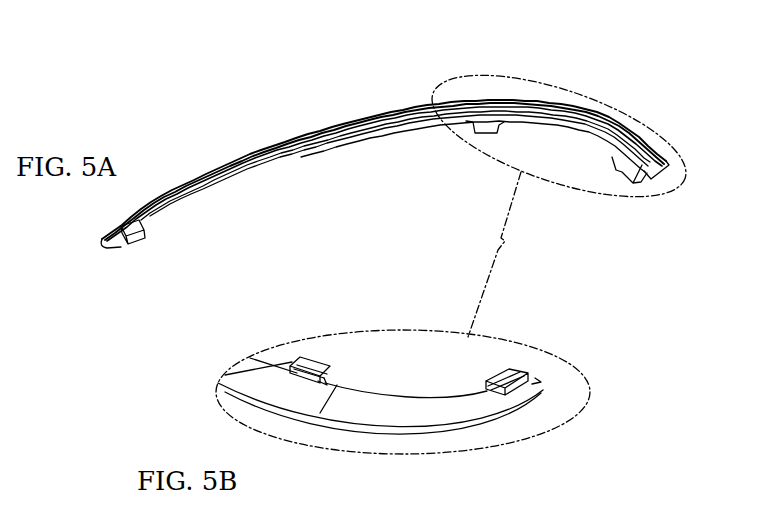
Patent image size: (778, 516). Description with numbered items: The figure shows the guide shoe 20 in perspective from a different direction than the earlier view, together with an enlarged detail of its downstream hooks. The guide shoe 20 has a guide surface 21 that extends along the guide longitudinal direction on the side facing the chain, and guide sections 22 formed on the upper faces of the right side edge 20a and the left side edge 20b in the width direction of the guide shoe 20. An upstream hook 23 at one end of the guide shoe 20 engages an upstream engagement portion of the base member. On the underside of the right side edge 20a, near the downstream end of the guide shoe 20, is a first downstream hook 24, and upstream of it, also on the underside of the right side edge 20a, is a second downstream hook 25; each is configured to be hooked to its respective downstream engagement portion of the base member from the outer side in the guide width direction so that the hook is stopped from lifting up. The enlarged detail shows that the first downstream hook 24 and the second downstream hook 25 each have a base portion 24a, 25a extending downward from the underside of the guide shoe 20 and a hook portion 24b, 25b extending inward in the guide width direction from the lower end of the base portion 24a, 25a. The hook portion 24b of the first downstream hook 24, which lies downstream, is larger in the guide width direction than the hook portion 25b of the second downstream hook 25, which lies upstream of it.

In FIG. 5A, the guide shoe 20 is at (107, 103).
In FIG. 5A, the right side edge 20a is at (378, 129).
In FIG. 5A, the left side edge 20b is at (387, 114).
In FIG. 5A, the guide surface 21 is at (563, 113).
In FIG. 5A, the guide sections 22 is at (352, 129).
In FIG. 5A, the upstream hook 23 is at (140, 245).
In FIG. 5A, the first downstream hook 24 is at (630, 181).
In FIG. 5B, the first downstream hook 24 is at (522, 393).
In FIG. 5B, the base portion 24a is at (531, 384).
In FIG. 5B, the hook portion 24b is at (500, 372).
In FIG. 5A, the second downstream hook 25 is at (483, 130).
In FIG. 5B, the second downstream hook 25 is at (296, 380).
In FIG. 5B, the base portion 25a is at (324, 380).
In FIG. 5B, the hook portion 25b is at (306, 363).